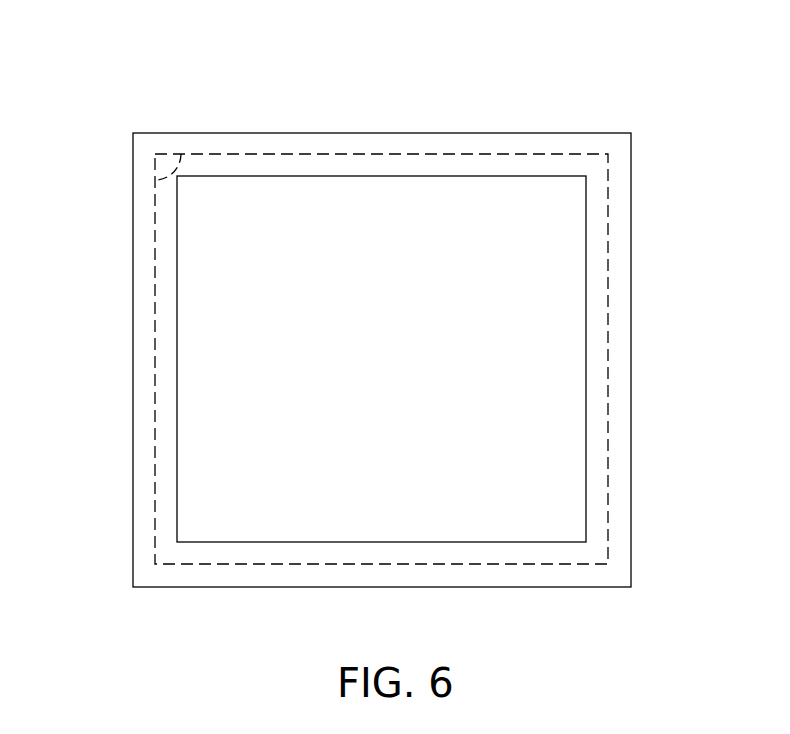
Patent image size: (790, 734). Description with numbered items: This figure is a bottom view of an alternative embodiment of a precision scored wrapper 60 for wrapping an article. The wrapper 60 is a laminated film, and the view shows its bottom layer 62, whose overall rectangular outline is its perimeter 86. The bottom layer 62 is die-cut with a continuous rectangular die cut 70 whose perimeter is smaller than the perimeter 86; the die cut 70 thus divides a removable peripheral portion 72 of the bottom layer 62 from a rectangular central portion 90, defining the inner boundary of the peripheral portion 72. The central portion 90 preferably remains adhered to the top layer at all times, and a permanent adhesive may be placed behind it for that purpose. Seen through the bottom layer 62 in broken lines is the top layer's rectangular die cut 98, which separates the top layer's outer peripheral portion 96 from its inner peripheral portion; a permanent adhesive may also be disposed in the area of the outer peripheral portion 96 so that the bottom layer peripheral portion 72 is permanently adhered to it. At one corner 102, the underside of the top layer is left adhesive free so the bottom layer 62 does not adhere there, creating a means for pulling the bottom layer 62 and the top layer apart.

The precision scored wrapper 60 is at (127, 80).
The bottom layer 62 is at (145, 270).
The rectangular die cut 70 is at (586, 448).
The peripheral portion 72 is at (147, 374).
The perimeter 86 is at (631, 385).
The central portion 90 is at (393, 369).
The outer peripheral portion 96 is at (617, 555).
The rectangular die cut 98 is at (608, 247).
The corner 102 is at (160, 161).